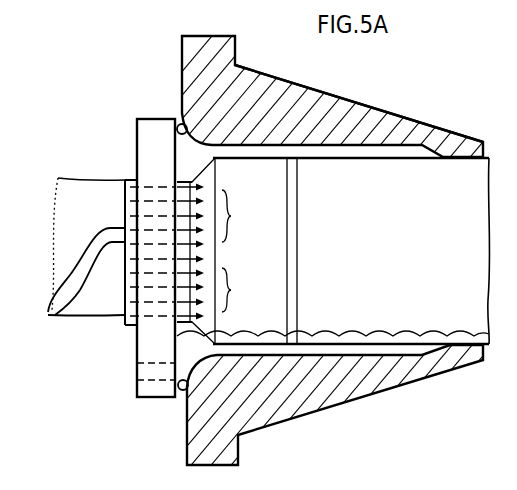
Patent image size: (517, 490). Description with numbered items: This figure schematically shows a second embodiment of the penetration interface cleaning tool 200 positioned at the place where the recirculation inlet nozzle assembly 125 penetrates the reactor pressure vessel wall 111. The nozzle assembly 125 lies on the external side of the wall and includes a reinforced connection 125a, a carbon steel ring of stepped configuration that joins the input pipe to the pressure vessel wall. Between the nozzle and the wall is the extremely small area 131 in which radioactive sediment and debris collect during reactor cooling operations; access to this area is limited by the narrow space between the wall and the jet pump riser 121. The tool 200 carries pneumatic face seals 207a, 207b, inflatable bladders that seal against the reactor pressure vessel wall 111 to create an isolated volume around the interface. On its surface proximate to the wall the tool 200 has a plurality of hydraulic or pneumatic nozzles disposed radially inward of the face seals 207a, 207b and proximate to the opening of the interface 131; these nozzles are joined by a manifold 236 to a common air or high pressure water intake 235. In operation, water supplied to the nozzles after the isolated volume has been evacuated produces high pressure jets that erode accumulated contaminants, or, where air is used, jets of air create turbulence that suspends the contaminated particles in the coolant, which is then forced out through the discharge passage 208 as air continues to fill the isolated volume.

The reactor pressure vessel wall 111 is at (207, 36).
The reinforced connection 125a is at (398, 113).
The pneumatic face seal 207b is at (179, 124).
The pneumatic face seal 207a is at (183, 392).
The penetration interface cleaning tool 200 is at (145, 140).
The discharge passage 208 is at (137, 372).
The riser 121 is at (96, 163).
The manifold 236 is at (112, 224).
The air or high pressure water intake 235 is at (121, 258).
The area collecting contaminants 131 is at (392, 161).
The nozzle assembly 125 is at (400, 249).